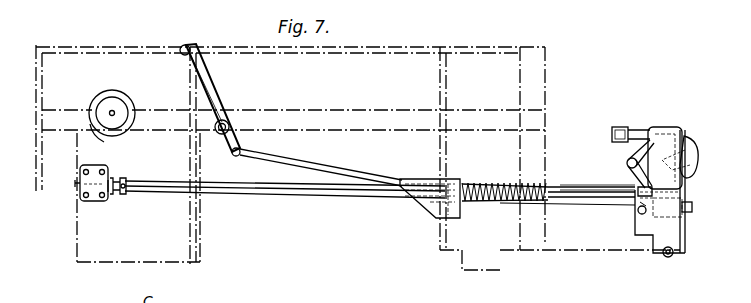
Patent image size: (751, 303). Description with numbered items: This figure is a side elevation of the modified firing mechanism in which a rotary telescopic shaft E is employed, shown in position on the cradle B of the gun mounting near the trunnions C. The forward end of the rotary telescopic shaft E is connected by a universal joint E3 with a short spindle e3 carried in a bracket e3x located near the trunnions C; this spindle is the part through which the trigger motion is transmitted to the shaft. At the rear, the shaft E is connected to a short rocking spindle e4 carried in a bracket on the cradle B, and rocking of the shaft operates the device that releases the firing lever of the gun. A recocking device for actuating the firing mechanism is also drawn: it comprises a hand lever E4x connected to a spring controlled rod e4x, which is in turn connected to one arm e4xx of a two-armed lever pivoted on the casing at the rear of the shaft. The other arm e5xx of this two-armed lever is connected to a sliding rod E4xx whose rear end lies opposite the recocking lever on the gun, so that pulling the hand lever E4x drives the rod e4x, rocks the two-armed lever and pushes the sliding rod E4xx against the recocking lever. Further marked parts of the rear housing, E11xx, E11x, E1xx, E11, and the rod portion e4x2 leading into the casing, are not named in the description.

The cradle B is at (358, 157).
The trunnions C is at (113, 110).
The hand lever E4x is at (208, 80).
The spring controlled rod e4x is at (352, 176).
The rotary telescopic shaft E is at (310, 193).
The short spindle e3 is at (94, 196).
The bracket e3x is at (93, 181).
The universal joint E3 is at (126, 188).
The sliding rod E4xx is at (637, 129).
The housing E11xx is at (690, 144).
The pivoted lobe E11x is at (693, 156).
The arm of two-armed lever e5xx is at (630, 157).
The rod extension e4x2 is at (572, 192).
The lower housing E1xx is at (667, 194).
The short rocking spindle e4 is at (668, 212).
The arm of two-armed lever e4xx is at (632, 186).
The pin E11 is at (637, 211).